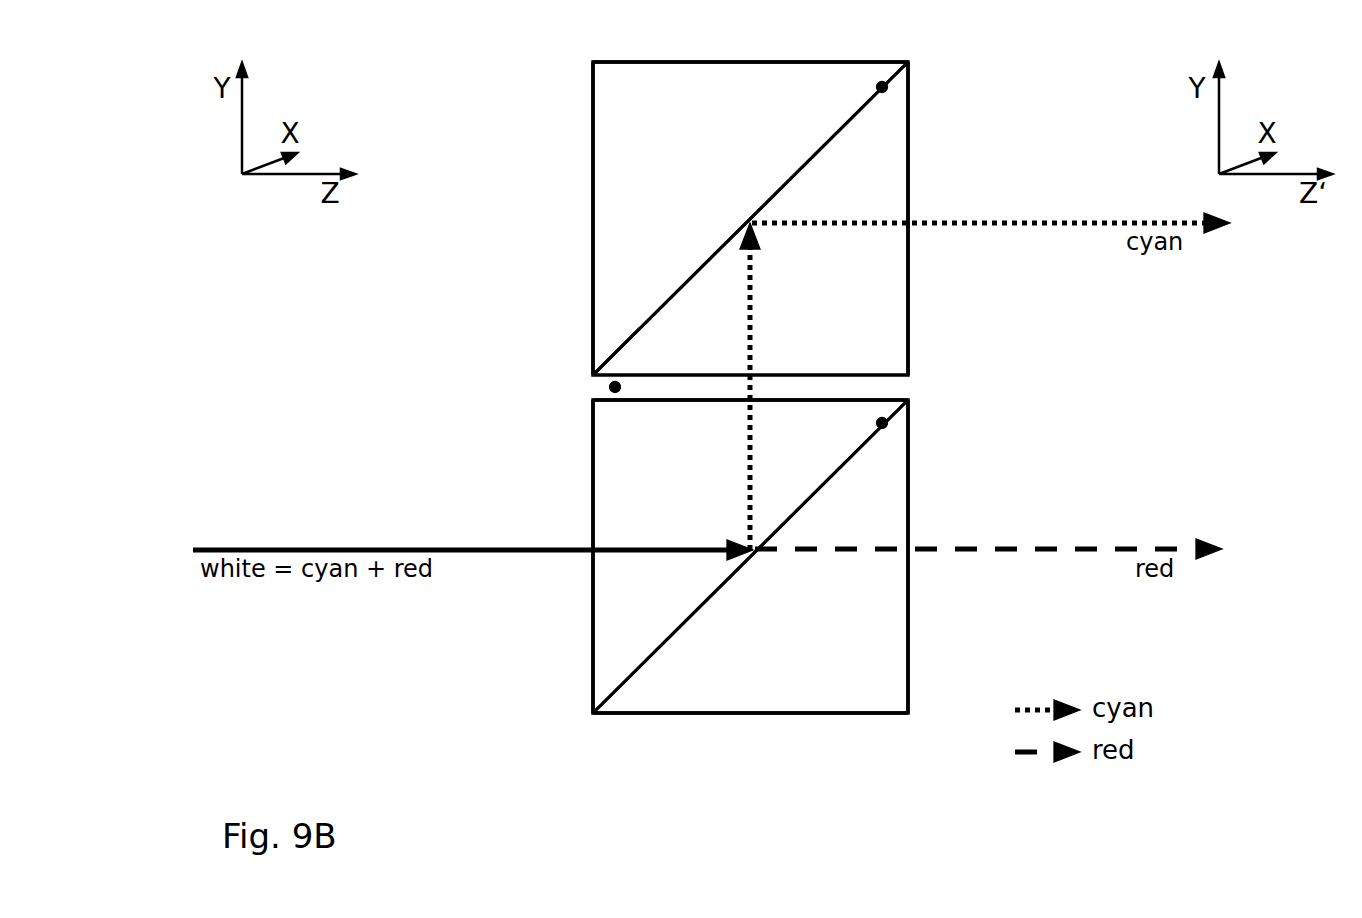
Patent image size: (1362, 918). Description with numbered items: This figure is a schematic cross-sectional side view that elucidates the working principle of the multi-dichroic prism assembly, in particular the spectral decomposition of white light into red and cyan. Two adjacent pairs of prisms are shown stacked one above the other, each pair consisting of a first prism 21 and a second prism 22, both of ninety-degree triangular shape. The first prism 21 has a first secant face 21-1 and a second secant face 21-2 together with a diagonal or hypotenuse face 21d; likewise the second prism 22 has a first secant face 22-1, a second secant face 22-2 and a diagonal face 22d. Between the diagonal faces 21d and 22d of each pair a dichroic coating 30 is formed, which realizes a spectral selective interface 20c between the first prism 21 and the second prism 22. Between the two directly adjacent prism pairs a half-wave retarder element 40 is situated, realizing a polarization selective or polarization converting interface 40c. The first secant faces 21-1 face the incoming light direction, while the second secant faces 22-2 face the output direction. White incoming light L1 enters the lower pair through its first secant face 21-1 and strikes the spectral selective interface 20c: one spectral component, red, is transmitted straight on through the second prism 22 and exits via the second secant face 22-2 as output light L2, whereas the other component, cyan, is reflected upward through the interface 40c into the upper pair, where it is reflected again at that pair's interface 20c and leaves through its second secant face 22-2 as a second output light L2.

The first prism 21 is at (620, 114).
The second prism 22 is at (859, 351).
The first secant face of the first prism 21-1 is at (586, 94).
The second secant face of the first prism 21-2 is at (786, 55).
The first secant face of the second prism 22-1 is at (612, 361).
The second secant face of the second prism 22-2 is at (916, 263).
The dichroic coating 30 is at (889, 93).
The spectral selective interface 20c is at (816, 387).
The diagonal face of the first prism 21d is at (816, 387).
The diagonal face of the second prism 22d is at (828, 160).
The λ/2-retarder element 40 is at (511, 385).
The polarization selective interface 40c is at (610, 387).
The incoming light beam L1 is at (232, 548).
The output light beams L2 is at (1130, 221).